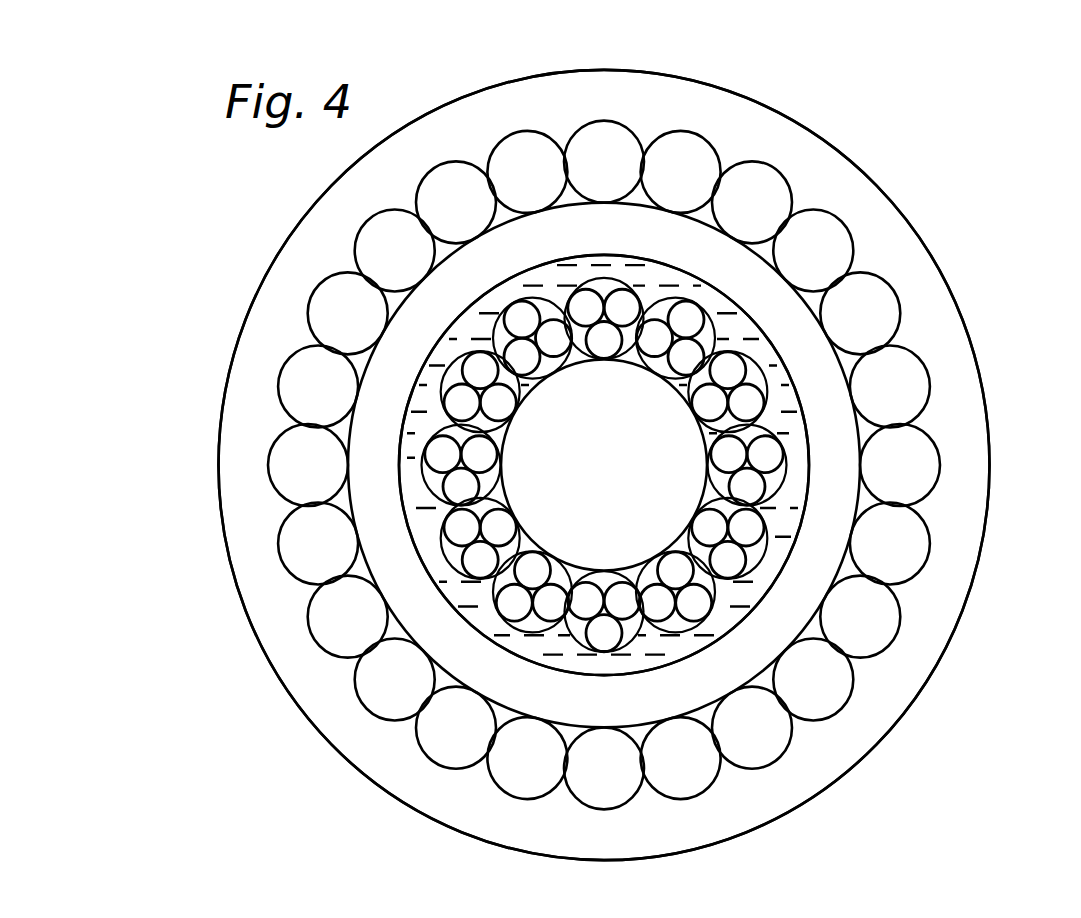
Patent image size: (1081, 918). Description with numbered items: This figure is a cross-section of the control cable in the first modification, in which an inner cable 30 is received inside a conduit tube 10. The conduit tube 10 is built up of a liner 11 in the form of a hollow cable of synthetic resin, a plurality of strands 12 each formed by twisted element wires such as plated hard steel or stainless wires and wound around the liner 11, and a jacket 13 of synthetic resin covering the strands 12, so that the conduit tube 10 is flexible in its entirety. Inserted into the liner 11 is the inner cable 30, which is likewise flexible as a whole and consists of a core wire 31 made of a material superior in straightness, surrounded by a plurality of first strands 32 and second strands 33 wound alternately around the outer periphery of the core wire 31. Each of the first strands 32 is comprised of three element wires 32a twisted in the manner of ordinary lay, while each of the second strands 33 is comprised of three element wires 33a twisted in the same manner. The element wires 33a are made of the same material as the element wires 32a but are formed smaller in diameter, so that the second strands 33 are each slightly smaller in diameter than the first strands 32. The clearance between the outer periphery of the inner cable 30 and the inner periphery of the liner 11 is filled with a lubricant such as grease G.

The conduit tube 10 is at (890, 180).
The liner 11 is at (702, 222).
The strands 12 is at (898, 300).
The jacket 13 is at (820, 132).
The inner cable 30 is at (780, 503).
The core wire 31 is at (603, 486).
The first strands 32 is at (578, 352).
The element wires 32a is at (630, 360).
The second strands 33 is at (635, 578).
The element wires 33a is at (658, 558).
The grease G is at (737, 603).